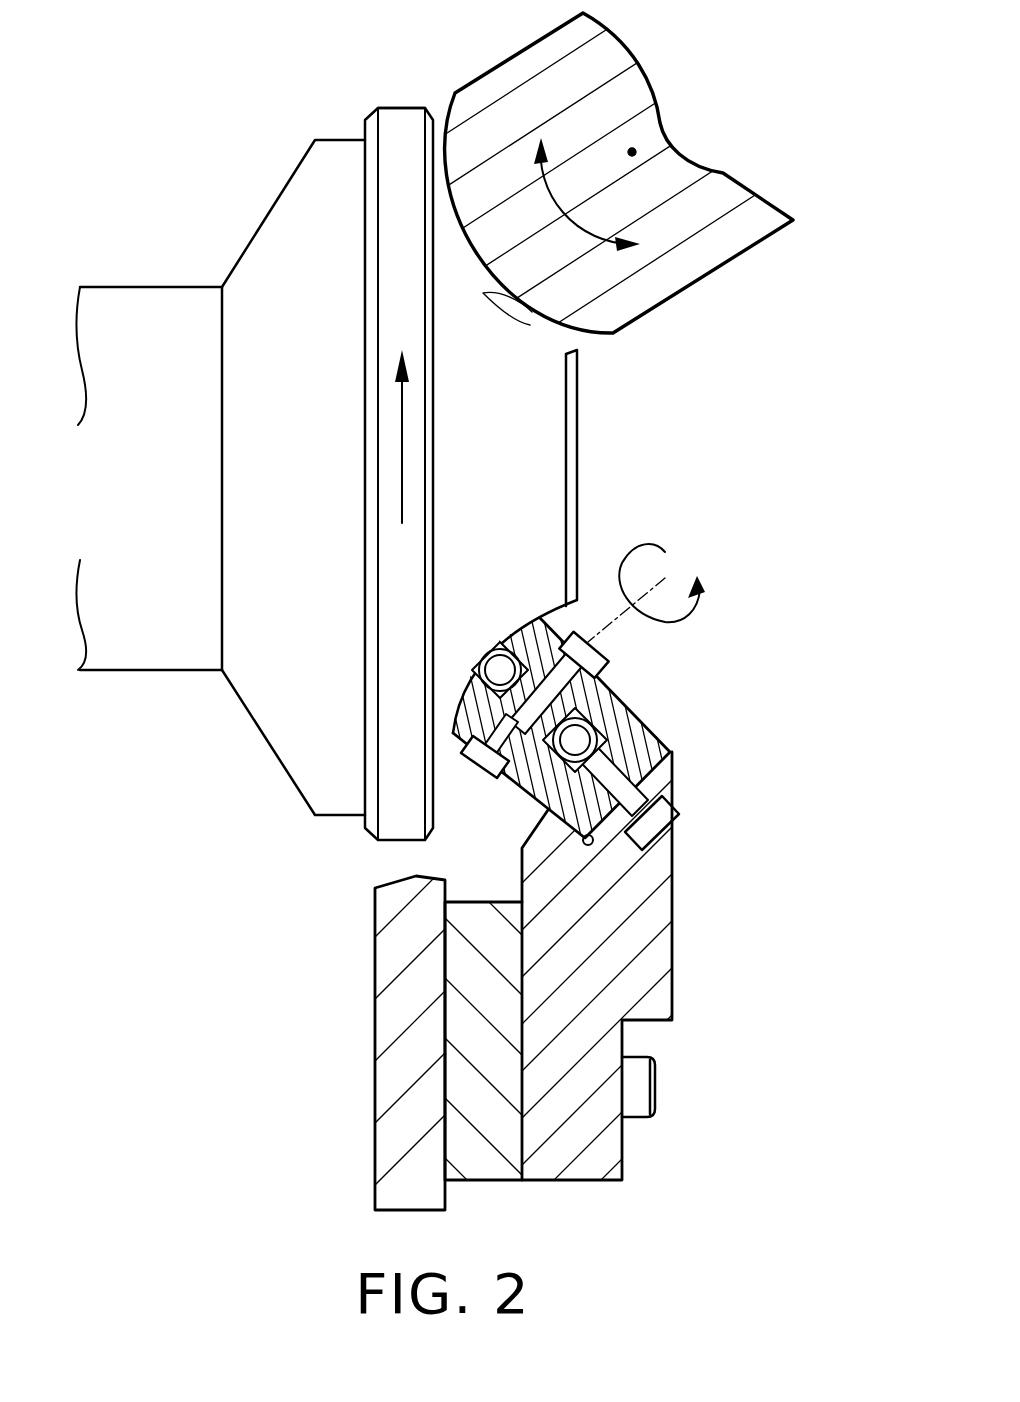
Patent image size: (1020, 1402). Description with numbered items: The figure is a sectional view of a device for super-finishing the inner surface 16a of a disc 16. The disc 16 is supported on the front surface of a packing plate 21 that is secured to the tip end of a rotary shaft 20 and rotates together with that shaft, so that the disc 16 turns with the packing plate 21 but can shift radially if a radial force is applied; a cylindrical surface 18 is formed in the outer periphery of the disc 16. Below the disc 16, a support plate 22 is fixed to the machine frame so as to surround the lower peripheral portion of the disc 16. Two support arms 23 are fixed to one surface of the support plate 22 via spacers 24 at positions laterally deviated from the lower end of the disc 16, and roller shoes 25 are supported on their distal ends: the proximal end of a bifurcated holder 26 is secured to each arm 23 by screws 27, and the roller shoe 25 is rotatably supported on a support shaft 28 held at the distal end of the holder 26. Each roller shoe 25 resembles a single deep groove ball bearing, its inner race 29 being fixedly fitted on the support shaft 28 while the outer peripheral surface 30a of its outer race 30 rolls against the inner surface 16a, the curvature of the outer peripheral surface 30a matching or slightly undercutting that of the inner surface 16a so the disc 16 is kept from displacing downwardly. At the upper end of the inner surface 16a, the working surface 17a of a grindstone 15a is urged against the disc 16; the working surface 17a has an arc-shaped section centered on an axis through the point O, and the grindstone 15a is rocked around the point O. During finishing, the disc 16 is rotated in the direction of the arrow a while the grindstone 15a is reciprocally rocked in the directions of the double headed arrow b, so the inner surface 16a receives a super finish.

The grindstone 15a is at (710, 190).
The disc 16 is at (402, 140).
The inner surface 16a is at (483, 293).
The working surface 17a is at (532, 312).
The cylindrical surface 18 is at (390, 107).
The rotary shaft 20 is at (142, 313).
The packing plate 21 is at (277, 247).
The support plate 22 is at (382, 1032).
The support arm 23 is at (660, 958).
The spacer 24 is at (497, 1162).
The roller shoe 25 is at (510, 630).
The bifurcated holder 26 is at (656, 748).
The screw 27 is at (662, 820).
The support shaft 28 is at (505, 787).
The inner race 29 is at (607, 639).
The outer race 30 is at (598, 742).
The outer peripheral surface 30a is at (485, 647).
The arrow a is at (400, 443).
The double headed arrow b is at (560, 133).
The point O is at (640, 150).